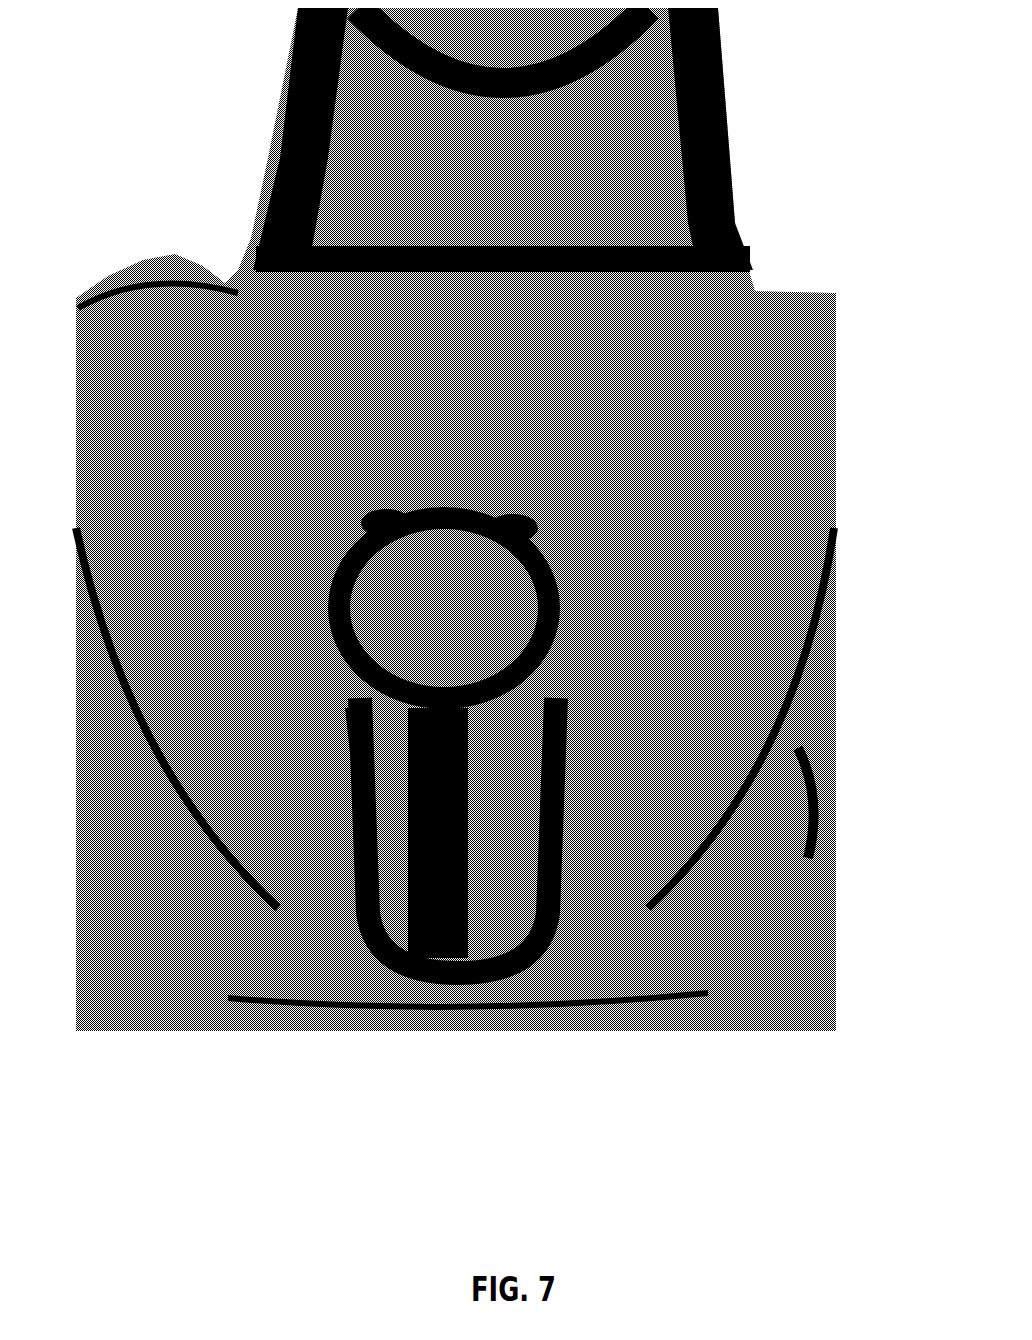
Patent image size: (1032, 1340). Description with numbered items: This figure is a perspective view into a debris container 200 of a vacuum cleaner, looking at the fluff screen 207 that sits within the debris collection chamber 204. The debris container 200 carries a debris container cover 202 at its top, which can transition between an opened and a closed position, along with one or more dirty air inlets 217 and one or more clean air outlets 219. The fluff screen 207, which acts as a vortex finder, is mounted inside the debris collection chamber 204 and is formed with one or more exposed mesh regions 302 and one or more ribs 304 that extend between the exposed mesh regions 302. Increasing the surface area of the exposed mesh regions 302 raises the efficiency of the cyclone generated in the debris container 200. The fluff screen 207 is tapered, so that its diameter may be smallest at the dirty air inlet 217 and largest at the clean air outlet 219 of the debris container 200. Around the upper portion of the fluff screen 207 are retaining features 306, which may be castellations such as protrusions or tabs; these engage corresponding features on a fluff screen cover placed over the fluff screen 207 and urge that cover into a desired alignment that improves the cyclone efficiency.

The debris container 200 is at (156, 140).
The debris container cover 202 is at (283, 68).
The debris collection chamber 204 is at (183, 465).
The fluff screen 207 is at (370, 588).
The dirty air inlet 217 is at (813, 757).
The clean air outlet 219 is at (308, 1030).
The exposed mesh region 302 is at (385, 757).
The rib 304 is at (335, 700).
The retaining feature 306 is at (370, 503).